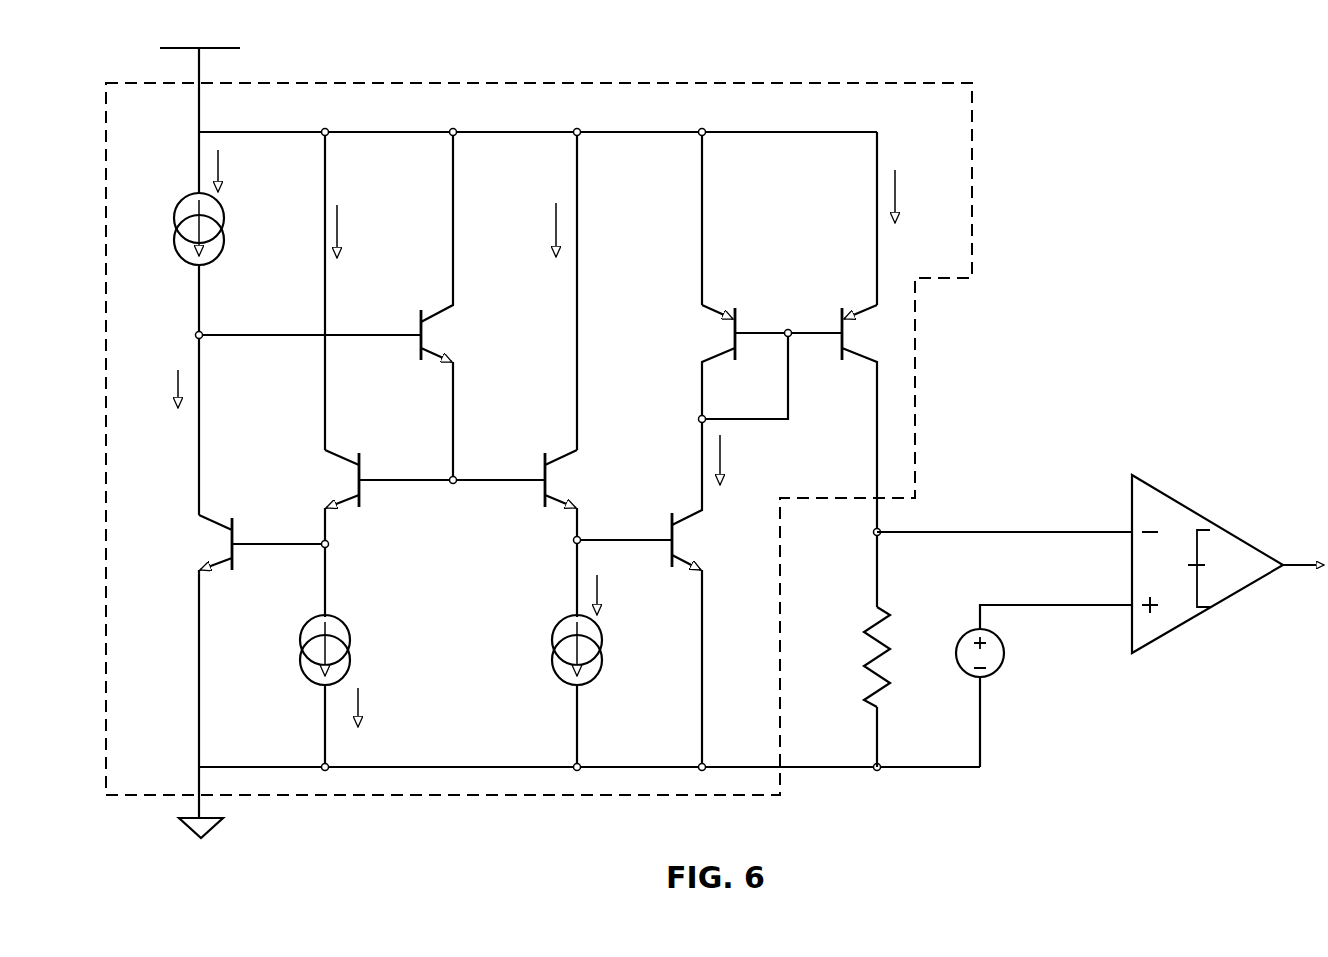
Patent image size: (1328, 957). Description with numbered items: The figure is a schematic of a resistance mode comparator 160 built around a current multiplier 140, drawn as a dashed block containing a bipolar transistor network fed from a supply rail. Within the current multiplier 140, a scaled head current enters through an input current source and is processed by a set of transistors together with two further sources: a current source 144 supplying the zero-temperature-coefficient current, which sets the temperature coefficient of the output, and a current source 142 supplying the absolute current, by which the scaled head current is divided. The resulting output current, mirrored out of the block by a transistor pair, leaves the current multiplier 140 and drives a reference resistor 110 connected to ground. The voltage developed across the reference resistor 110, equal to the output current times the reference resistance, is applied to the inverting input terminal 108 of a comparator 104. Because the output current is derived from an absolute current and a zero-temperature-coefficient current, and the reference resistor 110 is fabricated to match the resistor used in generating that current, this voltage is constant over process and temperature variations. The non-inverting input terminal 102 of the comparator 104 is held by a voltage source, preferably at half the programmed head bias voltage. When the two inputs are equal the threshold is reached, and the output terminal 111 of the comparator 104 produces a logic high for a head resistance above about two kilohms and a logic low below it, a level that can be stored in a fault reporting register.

The resistance mode comparator 160 is at (1097, 160).
The current multiplier 140 is at (535, 82).
The current source 144 is at (352, 645).
The current source 142 is at (603, 645).
The reference resistor 110 is at (856, 621).
The inverting input terminal 108 is at (1130, 532).
The non-inverting input terminal 102 is at (1130, 605).
The comparator 104 is at (1194, 508).
The output terminal 111 is at (1308, 564).